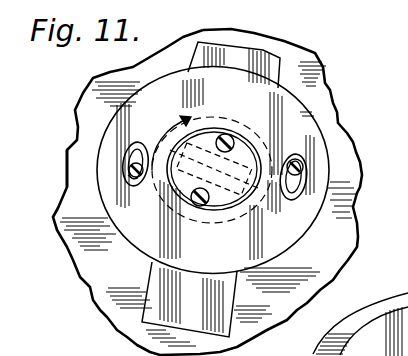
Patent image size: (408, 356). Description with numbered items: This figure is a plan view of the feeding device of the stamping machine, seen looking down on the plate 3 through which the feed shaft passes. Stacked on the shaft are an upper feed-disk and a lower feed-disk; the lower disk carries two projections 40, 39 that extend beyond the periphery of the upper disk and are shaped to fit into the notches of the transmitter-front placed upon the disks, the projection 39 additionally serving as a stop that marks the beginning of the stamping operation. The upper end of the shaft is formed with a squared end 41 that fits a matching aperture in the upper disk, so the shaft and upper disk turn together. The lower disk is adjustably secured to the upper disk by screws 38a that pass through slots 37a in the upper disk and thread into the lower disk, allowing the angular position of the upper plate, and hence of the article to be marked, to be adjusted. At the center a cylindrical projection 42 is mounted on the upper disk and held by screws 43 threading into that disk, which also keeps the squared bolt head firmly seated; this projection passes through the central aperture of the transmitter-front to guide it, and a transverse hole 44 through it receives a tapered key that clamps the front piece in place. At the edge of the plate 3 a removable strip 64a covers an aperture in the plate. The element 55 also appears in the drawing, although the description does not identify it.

The plate 3 is at (344, 234).
The slots in the upper disk 37a is at (124, 148).
The screws 38a is at (123, 181).
The projection of the lower disk 39 is at (160, 313).
The projection of the lower disk 40 is at (277, 60).
The squared end of the shaft 41 is at (264, 153).
The cylindrical projection 42 is at (236, 199).
The screws 43 is at (233, 135).
The transverse hole 44 is at (158, 183).
The rim segment 55 is at (354, 337).
The removable strip 64a is at (67, 164).